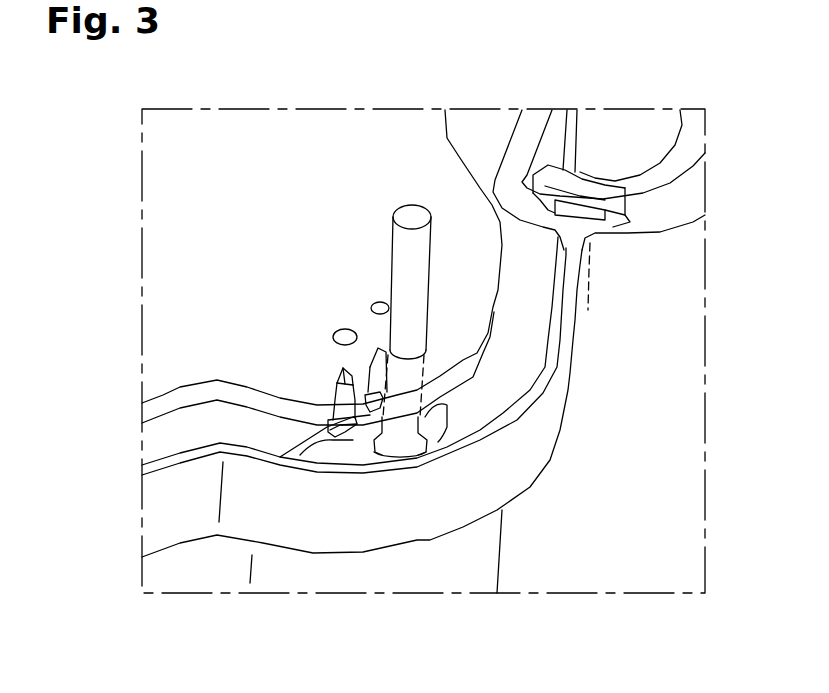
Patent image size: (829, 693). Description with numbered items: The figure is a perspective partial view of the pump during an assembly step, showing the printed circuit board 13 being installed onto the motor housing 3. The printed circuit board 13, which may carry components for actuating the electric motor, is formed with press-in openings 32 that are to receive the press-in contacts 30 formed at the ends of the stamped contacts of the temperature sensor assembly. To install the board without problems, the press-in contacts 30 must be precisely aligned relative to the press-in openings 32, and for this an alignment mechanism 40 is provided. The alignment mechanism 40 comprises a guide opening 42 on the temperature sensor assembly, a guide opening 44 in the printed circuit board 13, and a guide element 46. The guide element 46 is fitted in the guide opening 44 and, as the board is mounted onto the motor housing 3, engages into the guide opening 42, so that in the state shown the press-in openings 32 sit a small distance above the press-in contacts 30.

The motor housing 3 is at (373, 415).
The printed circuit board 13 is at (423, 267).
The press-in contact 30 is at (285, 521).
The press-in opening 32 is at (238, 297).
The alignment mechanism 40 is at (520, 432).
The guide opening 42 is at (329, 526).
The guide opening 44 is at (237, 384).
The guide element 46 is at (371, 266).